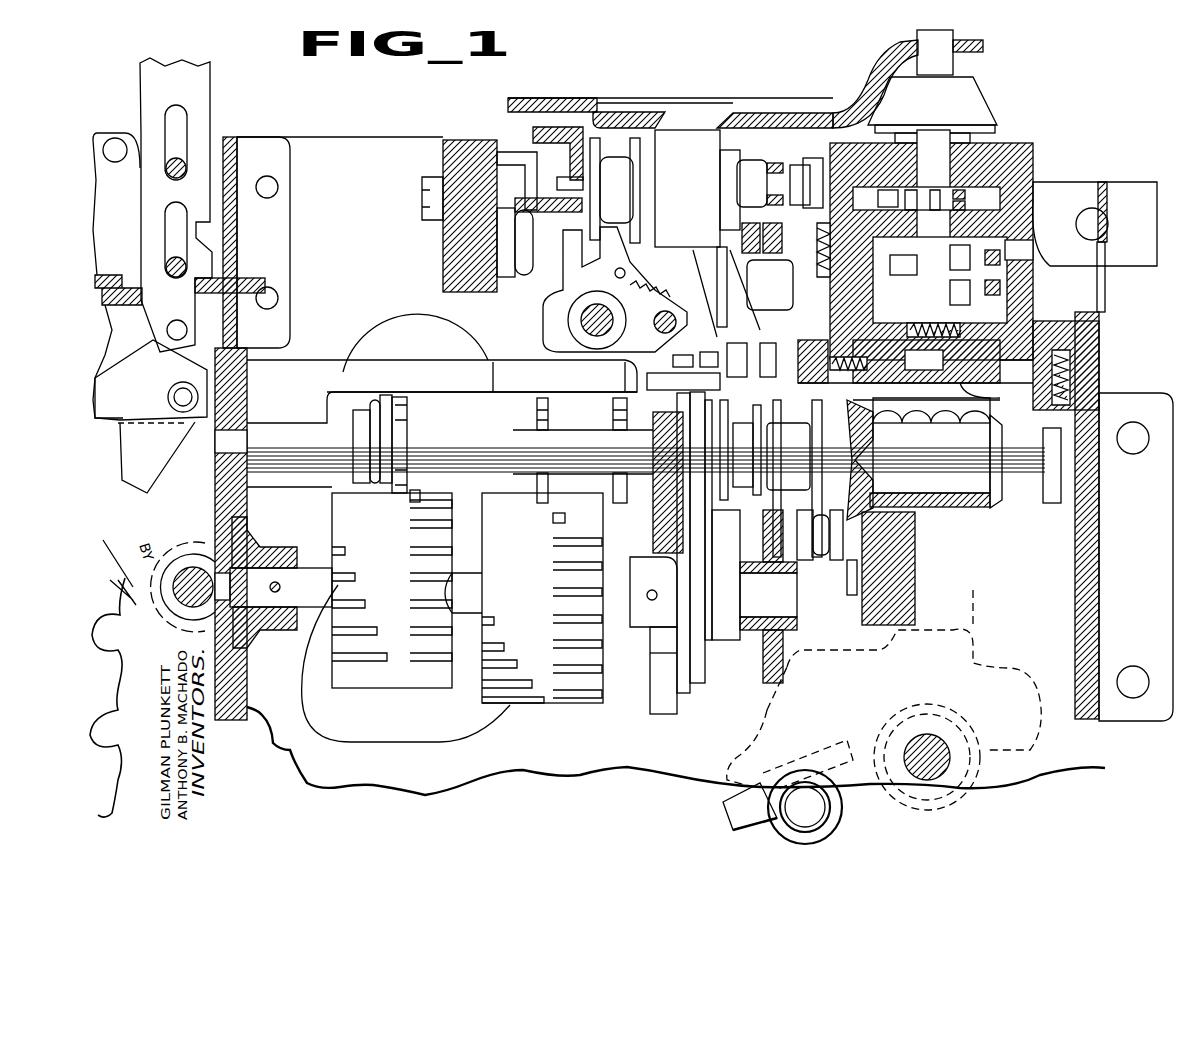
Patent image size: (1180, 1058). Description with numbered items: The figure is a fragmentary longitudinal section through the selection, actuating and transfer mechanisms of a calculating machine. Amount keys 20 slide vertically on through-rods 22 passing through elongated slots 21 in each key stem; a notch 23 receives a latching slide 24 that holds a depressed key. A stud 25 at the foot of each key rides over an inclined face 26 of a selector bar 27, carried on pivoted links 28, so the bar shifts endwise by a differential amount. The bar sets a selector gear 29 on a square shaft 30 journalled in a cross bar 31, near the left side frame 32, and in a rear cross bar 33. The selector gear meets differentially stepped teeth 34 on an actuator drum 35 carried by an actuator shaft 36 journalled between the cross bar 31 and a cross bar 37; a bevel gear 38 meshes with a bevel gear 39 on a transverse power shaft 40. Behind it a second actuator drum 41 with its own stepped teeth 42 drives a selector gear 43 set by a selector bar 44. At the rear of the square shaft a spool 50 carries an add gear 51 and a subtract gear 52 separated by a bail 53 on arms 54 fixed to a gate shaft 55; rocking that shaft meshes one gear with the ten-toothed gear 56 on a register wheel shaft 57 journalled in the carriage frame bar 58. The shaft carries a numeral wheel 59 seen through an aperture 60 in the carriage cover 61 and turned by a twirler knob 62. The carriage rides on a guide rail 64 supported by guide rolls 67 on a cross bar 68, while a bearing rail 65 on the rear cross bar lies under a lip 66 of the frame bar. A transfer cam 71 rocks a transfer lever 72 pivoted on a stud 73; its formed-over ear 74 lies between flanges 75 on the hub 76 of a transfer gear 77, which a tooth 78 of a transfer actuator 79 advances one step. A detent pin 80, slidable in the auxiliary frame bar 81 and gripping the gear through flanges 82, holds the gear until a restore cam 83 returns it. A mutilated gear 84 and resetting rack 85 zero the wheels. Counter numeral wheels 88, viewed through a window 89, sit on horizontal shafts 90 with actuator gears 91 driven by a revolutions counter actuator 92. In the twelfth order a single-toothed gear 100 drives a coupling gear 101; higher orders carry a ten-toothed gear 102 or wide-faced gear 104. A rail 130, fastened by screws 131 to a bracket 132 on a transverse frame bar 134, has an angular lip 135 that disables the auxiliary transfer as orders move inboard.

The amount key 20 is at (205, 86).
The elongated slot 21 is at (178, 122).
The through-rod 22 is at (170, 172).
The notch 23 is at (200, 222).
The latching slide 24 is at (268, 288).
The stud 25 is at (170, 332).
The inclined face 26 is at (166, 379).
The selector bar 27 is at (118, 428).
The pivoted link 28 is at (136, 466).
The selector gear 29 is at (401, 400).
The square shaft 30 is at (305, 427).
The cross bar 31 is at (238, 500).
The left side frame 32 is at (381, 137).
The cross bar 33 is at (1083, 577).
The differentially stepped teeth 34 is at (401, 682).
The actuator drum 35 is at (341, 682).
The actuator shaft 36 is at (313, 562).
The cross bar 37 is at (791, 683).
The bevel gear 38 is at (266, 625).
The bevel gear 39 is at (180, 530).
The transverse power shaft 40 is at (193, 587).
The second actuator drum 41 is at (480, 620).
The differentially stepped teeth 42 is at (521, 690).
The selector gear 43 is at (591, 415).
The selector bar 44 is at (536, 372).
The spool 50 is at (947, 476).
The add gear 51 is at (869, 471).
The subtract gear 52 is at (993, 445).
The bail 53 is at (951, 500).
The arm 54 is at (958, 612).
The gate shaft 55 is at (936, 785).
The ten-toothed gear 56 is at (944, 420).
The register wheel shaft 57 is at (940, 278).
The carriage frame bar 58 is at (1043, 174).
The numeral wheel 59 is at (976, 88).
The aperture 60 is at (876, 78).
The carriage cover 61 is at (806, 110).
The twirler knob 62 is at (951, 60).
The guide rail 64 is at (535, 135).
The bearing rail 65 is at (1079, 345).
The lip 66 is at (1051, 316).
The guide roll 67 is at (526, 262).
The cross bar 68 is at (465, 268).
The transfer cam 71 is at (973, 382).
The transfer lever 72 is at (915, 370).
The stud 73 is at (801, 348).
The formed-over ear 74 is at (789, 478).
The flange 75 is at (813, 430).
The hub 76 is at (753, 445).
The transfer gear 77 is at (723, 462).
The tooth 78 is at (700, 688).
The transfer actuator 79 is at (704, 655).
The detent pin 80 is at (842, 584).
The auxiliary frame bar 81 is at (901, 572).
The flange 82 is at (806, 556).
The restore cam 83 is at (768, 570).
The mutilated gear 84 is at (906, 205).
The resetting rack 85 is at (977, 178).
The numeral wheel 88 is at (681, 128).
The window 89 is at (656, 110).
The horizontal shaft 90 is at (749, 165).
The actuator gear 91 is at (626, 165).
The revolutions counter actuator 92 is at (535, 330).
The single-toothed gear 100 is at (889, 298).
The coupling gear 101 is at (796, 277).
The ten-toothed gear 102 is at (1039, 278).
The wide-faced gear 104 is at (986, 286).
The rail 130 is at (711, 362).
The screw 131 is at (636, 371).
The bracket 132 is at (641, 388).
The transverse frame bar 134 is at (661, 520).
The angular lip 135 is at (753, 375).